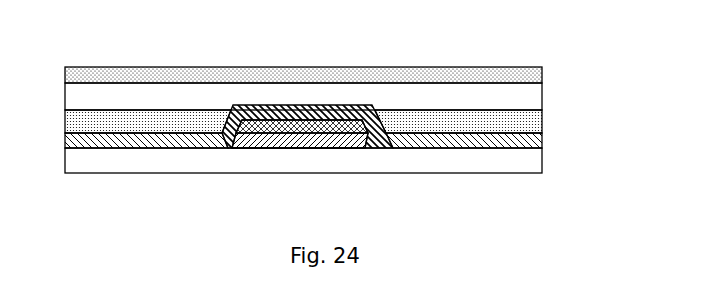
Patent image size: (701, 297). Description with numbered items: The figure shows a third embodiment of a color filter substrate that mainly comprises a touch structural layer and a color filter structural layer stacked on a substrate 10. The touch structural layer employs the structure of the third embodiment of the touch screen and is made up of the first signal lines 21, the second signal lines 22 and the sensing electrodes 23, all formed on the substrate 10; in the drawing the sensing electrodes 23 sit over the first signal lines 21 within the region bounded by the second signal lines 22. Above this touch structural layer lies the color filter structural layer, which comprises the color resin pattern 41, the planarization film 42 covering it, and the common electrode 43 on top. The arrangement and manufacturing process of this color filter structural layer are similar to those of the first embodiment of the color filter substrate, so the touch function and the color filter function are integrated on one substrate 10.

The substrate 10 is at (170, 161).
The first signal lines 21 is at (350, 138).
The second signal lines 22 is at (437, 142).
The sensing electrodes 23 is at (296, 125).
The color resin pattern 41 is at (165, 120).
The planarization film 42 is at (443, 100).
The common electrode 43 is at (308, 77).